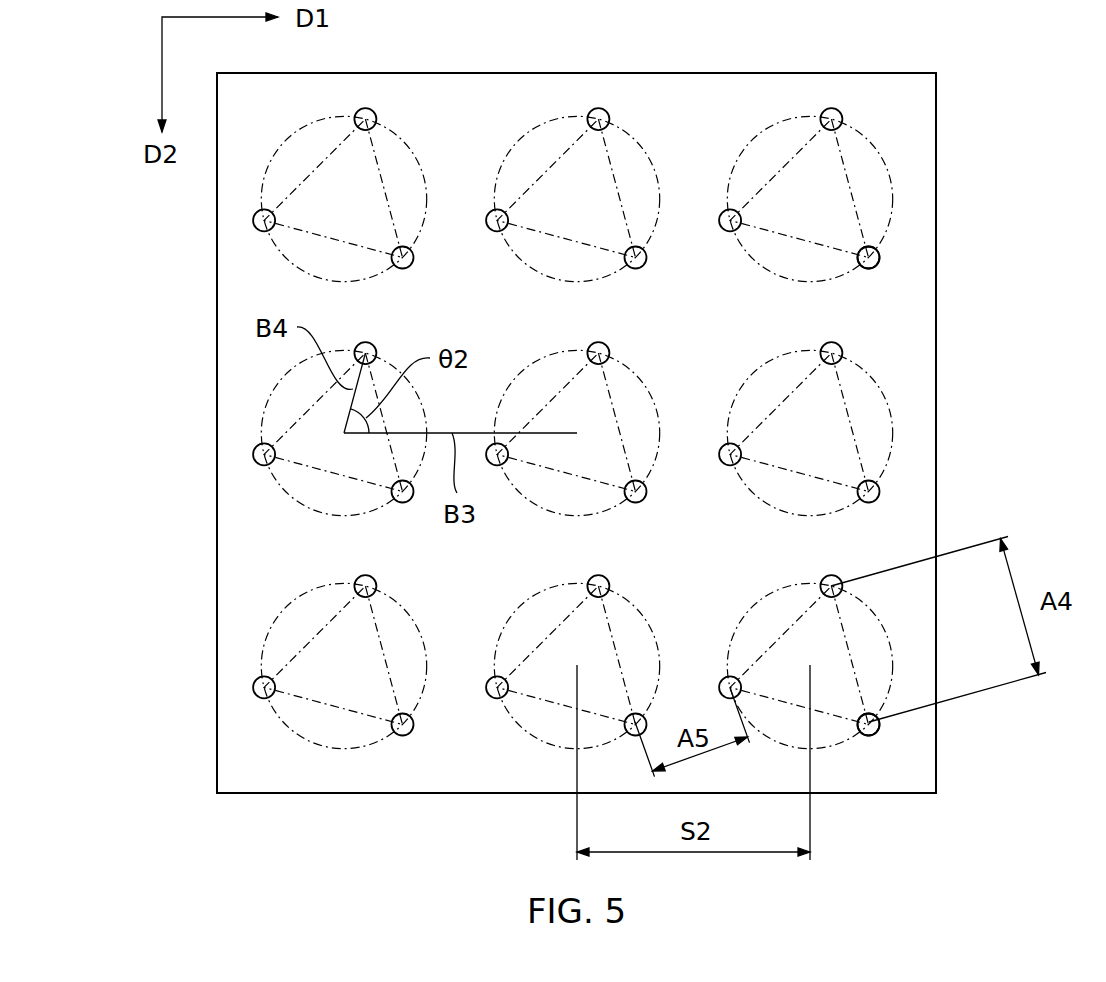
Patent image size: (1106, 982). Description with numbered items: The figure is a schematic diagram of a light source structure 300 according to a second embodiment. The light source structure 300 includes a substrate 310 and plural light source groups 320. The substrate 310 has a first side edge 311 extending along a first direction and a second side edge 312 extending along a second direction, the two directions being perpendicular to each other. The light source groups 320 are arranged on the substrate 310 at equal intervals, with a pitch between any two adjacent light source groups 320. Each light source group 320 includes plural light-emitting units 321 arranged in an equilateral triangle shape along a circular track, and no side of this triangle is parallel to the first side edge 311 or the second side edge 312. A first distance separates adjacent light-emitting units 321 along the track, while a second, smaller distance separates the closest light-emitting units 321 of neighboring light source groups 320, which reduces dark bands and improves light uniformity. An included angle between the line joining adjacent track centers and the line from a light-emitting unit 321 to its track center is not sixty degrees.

The light source structure 300 is at (80, 68).
The substrate 310 is at (922, 88).
The first side edge 311 is at (626, 73).
The second side edge 312 is at (217, 400).
The light source group 320 is at (884, 136).
The light-emitting unit 321 is at (880, 259).